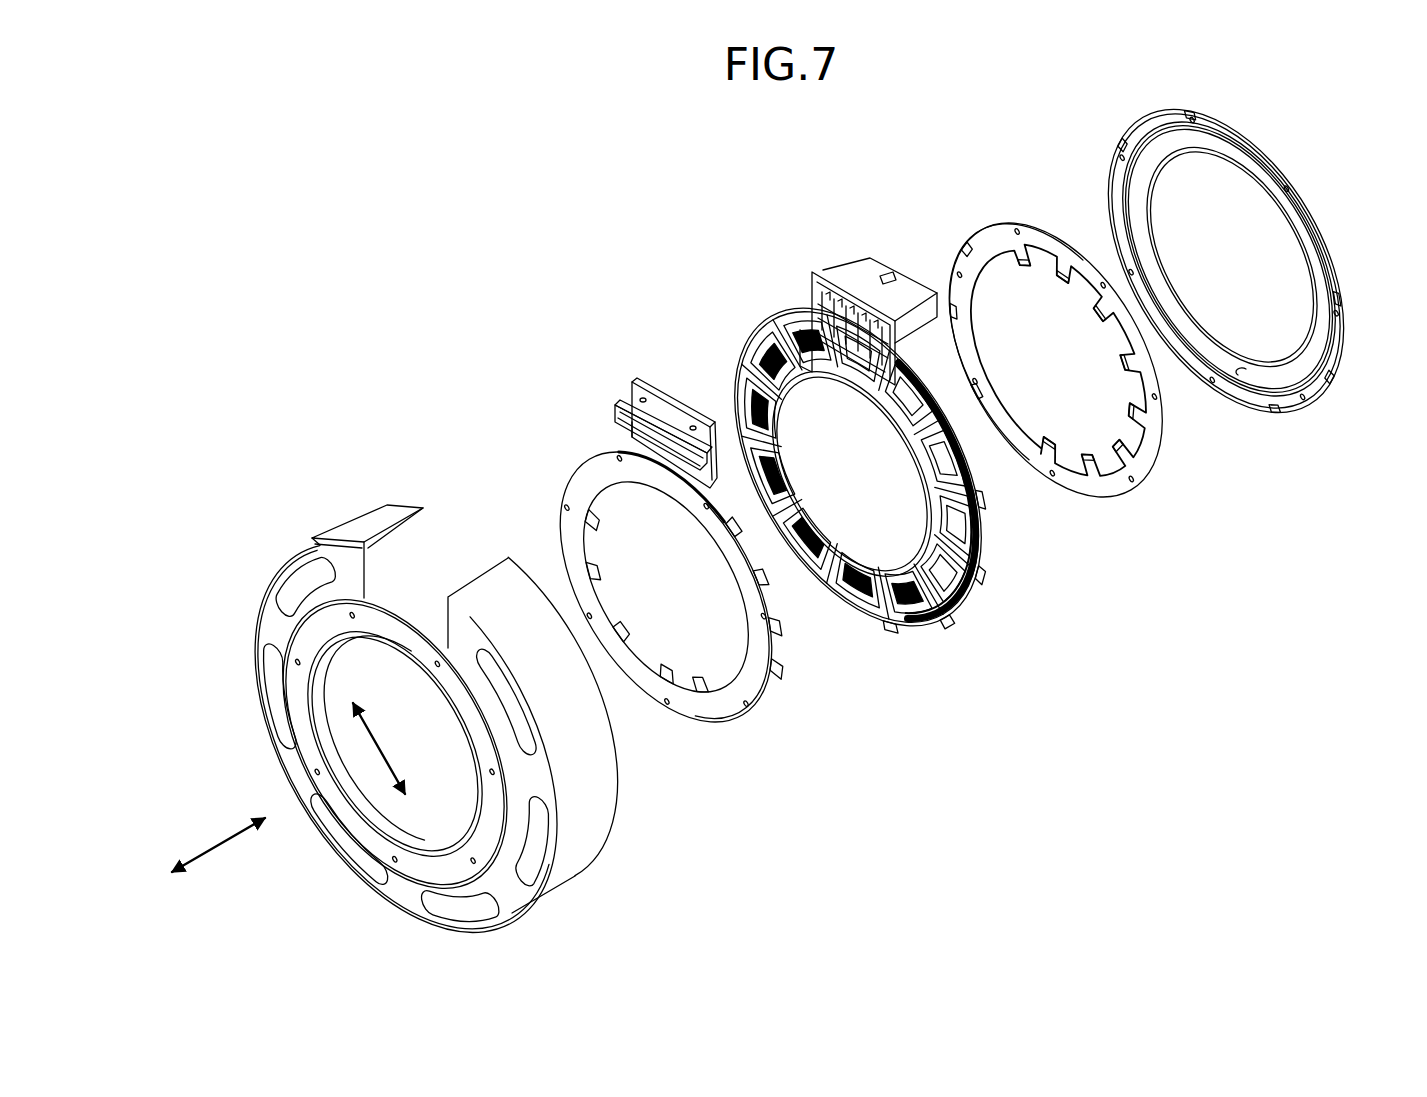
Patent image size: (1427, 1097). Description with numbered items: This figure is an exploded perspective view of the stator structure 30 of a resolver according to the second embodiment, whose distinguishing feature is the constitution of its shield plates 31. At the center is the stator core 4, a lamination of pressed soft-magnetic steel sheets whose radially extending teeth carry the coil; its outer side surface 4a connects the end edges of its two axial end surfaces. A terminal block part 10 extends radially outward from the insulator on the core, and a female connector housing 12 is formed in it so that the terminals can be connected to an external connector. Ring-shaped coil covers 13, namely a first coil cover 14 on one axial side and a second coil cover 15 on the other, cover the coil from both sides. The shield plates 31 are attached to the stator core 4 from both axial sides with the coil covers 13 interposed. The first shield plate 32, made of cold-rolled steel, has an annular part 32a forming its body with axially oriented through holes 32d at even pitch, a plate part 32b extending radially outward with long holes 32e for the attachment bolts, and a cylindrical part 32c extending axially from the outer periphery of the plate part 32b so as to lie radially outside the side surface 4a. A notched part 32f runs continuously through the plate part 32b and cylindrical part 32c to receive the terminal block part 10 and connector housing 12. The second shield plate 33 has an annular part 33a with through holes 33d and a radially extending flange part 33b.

The stator structure 30 is at (580, 187).
The shield plates 31 is at (802, 524).
The first shield plate 32 is at (325, 507).
The second shield plate 33 is at (1115, 119).
The coil covers 13 is at (856, 462).
The first coil cover 14 is at (568, 457).
The second coil cover 15 is at (993, 217).
The stator core 4 is at (760, 334).
The side surface 4a is at (985, 562).
The terminal block part 10 is at (813, 272).
The connector housing 12 is at (868, 258).
The annular part 32a is at (418, 858).
The plate part 32b is at (505, 900).
The cylindrical part 32c is at (600, 812).
The through holes 32d is at (377, 851).
The holes 32e is at (460, 910).
The notched part 32f is at (408, 518).
The annular part 33a is at (1277, 370).
The flange part 33b is at (1333, 363).
The through holes 33d is at (1243, 362).